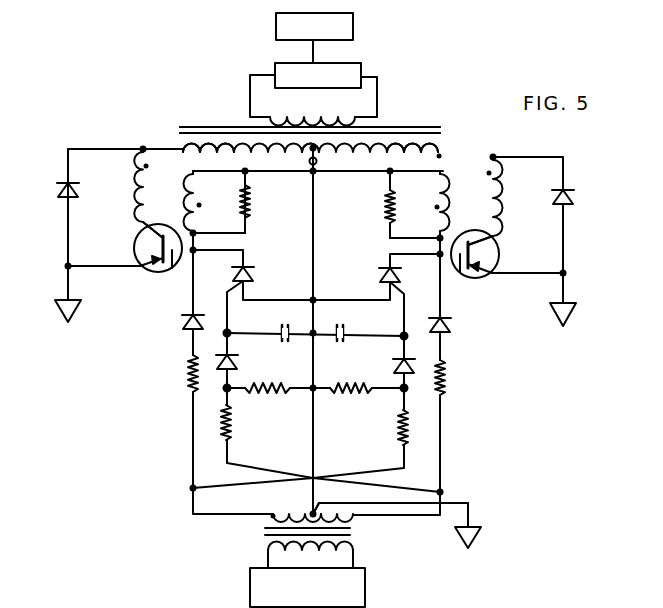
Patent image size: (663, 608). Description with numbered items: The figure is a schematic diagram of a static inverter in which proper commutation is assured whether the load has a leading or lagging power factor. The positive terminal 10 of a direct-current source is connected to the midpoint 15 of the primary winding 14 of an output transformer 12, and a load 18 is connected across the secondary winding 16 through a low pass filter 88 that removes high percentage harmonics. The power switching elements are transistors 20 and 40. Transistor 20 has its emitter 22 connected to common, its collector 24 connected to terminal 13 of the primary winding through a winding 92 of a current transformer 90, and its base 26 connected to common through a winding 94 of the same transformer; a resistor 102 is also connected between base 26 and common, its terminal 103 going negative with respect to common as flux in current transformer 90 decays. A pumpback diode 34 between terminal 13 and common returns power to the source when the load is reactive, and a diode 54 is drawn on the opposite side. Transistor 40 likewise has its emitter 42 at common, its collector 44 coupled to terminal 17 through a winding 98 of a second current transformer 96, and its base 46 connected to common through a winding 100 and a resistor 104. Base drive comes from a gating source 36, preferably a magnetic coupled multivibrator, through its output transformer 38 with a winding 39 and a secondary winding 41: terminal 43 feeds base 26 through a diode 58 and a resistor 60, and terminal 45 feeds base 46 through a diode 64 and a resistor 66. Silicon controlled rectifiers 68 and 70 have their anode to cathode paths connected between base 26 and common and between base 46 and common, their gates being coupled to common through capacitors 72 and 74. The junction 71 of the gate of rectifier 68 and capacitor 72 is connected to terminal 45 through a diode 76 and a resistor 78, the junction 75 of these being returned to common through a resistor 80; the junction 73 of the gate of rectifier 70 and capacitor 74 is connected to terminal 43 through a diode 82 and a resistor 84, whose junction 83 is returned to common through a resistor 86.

The positive terminal 10 is at (317, 161).
The output transformer 12 is at (310, 121).
The terminal 13 is at (183, 144).
The primary winding 14 is at (226, 148).
The midpoint 15 is at (311, 151).
The secondary winding 16 is at (322, 119).
The terminal 17 is at (441, 149).
The load 18 is at (353, 36).
The transistor 20 is at (142, 249).
The emitter 22 is at (158, 268).
The collector 24 is at (163, 233).
The base 26 is at (172, 269).
The diode 34 is at (58, 190).
The gating source 36 is at (366, 583).
The output transformer of gating source 38 is at (291, 543).
The gating transformer primary winding 39 is at (351, 545).
The transistor 40 is at (490, 251).
The secondary winding 41 is at (348, 523).
The emitter 42 is at (481, 274).
The terminal 43 is at (268, 517).
The collector 44 is at (470, 240).
The terminal 45 is at (395, 517).
The base 46 is at (459, 278).
The diode 54 is at (575, 197).
The diode 58 is at (180, 322).
The resistor 60 is at (187, 370).
The diode 64 is at (450, 325).
The resistor 66 is at (447, 381).
The silicon controlled rectifier 68 is at (247, 268).
The silicon controlled rectifier 70 is at (380, 276).
The junction 71 is at (235, 322).
The capacitor 72 is at (290, 323).
The junction 73 is at (394, 326).
The capacitor 74 is at (345, 330).
The junction 75 is at (224, 389).
The diode 76 is at (233, 363).
The resistor 78 is at (232, 429).
The resistor 80 is at (276, 384).
The diode 82 is at (392, 366).
The junction 83 is at (401, 389).
The resistor 84 is at (398, 430).
The resistor 86 is at (350, 384).
The low pass filter 88 is at (361, 65).
The current transformer 90 is at (219, 202).
The winding 92 is at (138, 181).
The winding 94 is at (186, 190).
The current transformer 96 is at (436, 201).
The winding 98 is at (498, 202).
The winding 100 is at (443, 195).
The resistor 102 is at (250, 194).
The terminal 103 is at (247, 226).
The resistor 104 is at (386, 200).